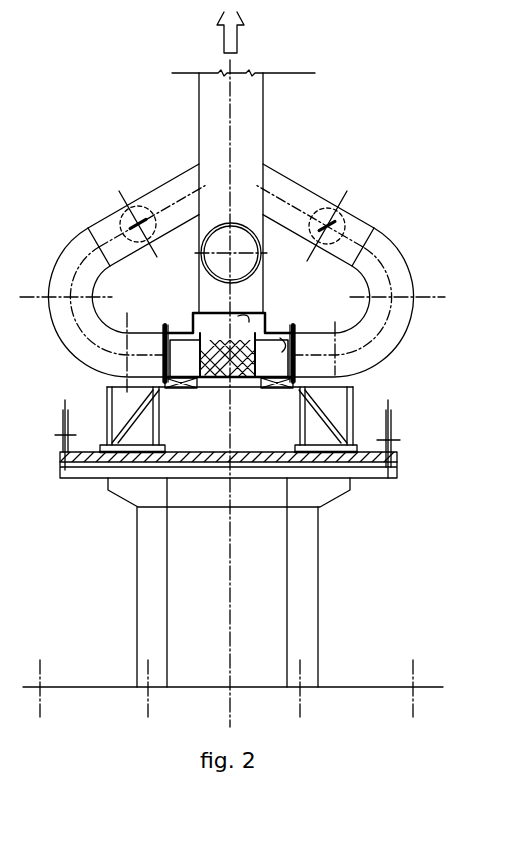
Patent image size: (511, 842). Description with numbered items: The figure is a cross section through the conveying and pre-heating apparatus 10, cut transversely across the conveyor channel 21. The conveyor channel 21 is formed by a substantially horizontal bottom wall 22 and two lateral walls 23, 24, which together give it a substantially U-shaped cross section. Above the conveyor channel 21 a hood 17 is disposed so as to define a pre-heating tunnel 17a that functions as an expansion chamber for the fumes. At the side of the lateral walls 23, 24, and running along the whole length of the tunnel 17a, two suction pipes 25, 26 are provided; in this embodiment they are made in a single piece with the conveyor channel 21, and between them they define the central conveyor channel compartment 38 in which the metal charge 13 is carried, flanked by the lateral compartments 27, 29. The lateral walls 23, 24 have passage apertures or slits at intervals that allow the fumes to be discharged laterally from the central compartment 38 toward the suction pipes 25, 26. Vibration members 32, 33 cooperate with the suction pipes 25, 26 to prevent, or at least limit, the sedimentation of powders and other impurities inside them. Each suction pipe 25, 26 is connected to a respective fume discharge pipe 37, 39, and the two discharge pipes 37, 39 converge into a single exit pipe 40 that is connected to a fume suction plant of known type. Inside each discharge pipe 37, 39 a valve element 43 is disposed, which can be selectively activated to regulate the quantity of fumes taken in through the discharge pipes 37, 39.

The conveying and pre-heating apparatus 10 is at (387, 132).
The exit pipe 40 is at (245, 113).
The valve element 43 is at (135, 212).
The fume discharge pipe 37 is at (85, 250).
The fume discharge pipe 39 is at (385, 252).
The lateral compartment 29 is at (352, 317).
The lateral compartment 27 is at (163, 345).
The suction pipe 25 is at (163, 360).
The suction pipe 26 is at (298, 372).
The lateral wall 23 is at (172, 327).
The hood 17 is at (213, 311).
The pre-heating tunnel 17a is at (254, 312).
The lateral wall 24 is at (283, 322).
The bottom wall 22 is at (232, 380).
The central conveyor channel compartment 38 is at (250, 380).
The metal charge 13 is at (210, 382).
The conveyor channel 21 is at (204, 386).
The vibration member 32 is at (160, 392).
The vibration member 33 is at (312, 405).